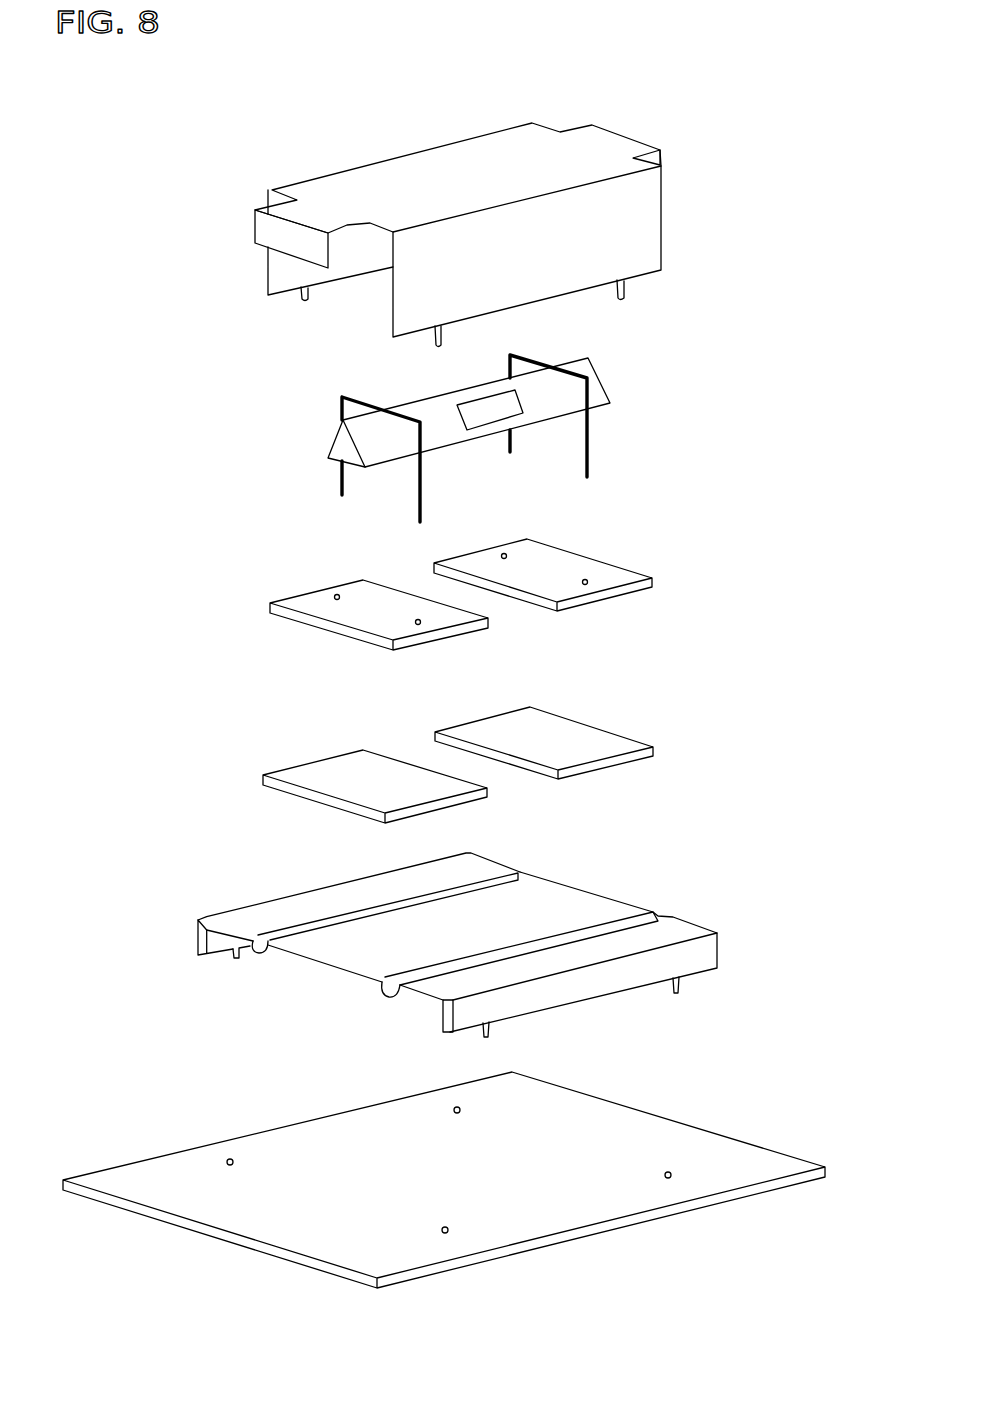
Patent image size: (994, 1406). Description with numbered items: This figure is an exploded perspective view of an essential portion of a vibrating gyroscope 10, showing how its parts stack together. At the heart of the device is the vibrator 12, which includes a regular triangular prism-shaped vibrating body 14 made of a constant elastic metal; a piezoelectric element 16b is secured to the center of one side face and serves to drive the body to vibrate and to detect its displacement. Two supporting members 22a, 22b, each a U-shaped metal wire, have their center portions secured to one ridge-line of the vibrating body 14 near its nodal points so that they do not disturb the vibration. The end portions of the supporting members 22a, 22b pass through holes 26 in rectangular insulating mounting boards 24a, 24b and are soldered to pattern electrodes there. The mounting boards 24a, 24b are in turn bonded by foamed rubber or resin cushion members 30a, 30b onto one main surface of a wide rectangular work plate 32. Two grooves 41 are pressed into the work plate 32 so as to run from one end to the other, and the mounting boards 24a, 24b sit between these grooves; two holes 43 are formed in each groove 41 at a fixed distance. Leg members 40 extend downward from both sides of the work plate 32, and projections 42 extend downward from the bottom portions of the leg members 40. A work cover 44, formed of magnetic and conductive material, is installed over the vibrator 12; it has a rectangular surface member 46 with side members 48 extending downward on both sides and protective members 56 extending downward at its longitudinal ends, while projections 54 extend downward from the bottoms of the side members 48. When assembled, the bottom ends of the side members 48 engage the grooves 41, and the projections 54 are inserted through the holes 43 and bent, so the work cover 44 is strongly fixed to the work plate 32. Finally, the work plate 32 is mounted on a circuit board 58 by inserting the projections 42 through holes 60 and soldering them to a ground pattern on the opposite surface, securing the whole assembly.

The vibrating gyroscope 10 is at (622, 58).
The vibrator 12 is at (516, 440).
The vibrating body 14 is at (511, 431).
The piezoelectric element 16b is at (495, 415).
The supporting member 22a is at (420, 495).
The supporting member 22b is at (592, 462).
The mounting board 24a is at (342, 620).
The mounting board 24b is at (590, 562).
The hole 26 is at (329, 588).
The cushion member 30a is at (358, 788).
The cushion member 30b is at (565, 735).
The work plate 32 is at (440, 954).
The leg member 40 is at (215, 942).
The groove 41 is at (255, 958).
The projection 42 is at (232, 960).
The hole 43 is at (326, 918).
The work cover 44 is at (450, 229).
The surface member 46 is at (356, 190).
The side member 48 is at (278, 278).
The projection 54 is at (300, 293).
The protective member 56 is at (270, 230).
The circuit board 58 is at (444, 1174).
The hole 60 is at (220, 1152).